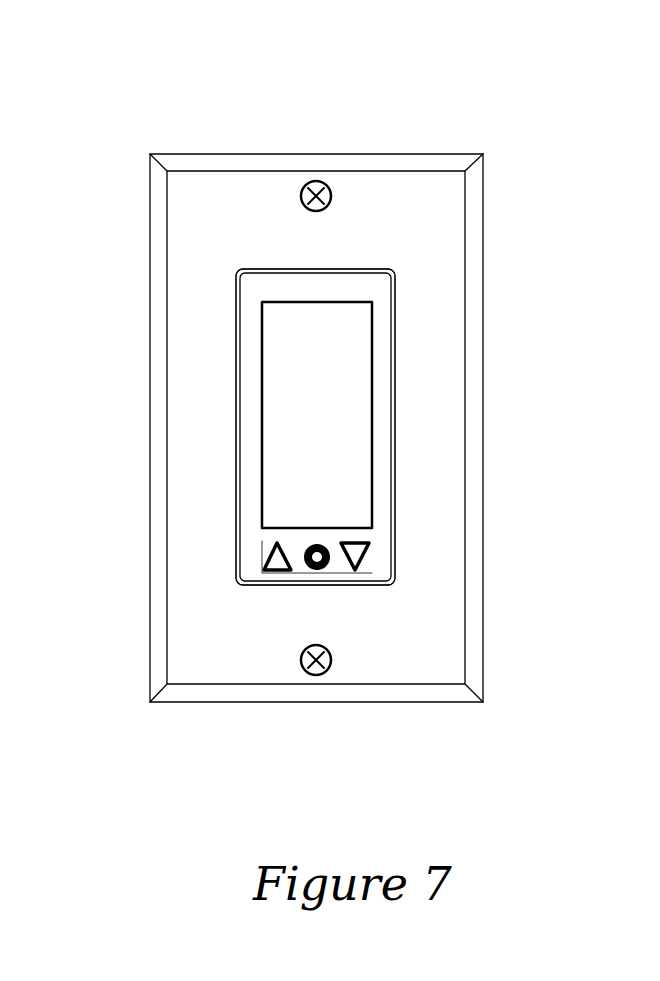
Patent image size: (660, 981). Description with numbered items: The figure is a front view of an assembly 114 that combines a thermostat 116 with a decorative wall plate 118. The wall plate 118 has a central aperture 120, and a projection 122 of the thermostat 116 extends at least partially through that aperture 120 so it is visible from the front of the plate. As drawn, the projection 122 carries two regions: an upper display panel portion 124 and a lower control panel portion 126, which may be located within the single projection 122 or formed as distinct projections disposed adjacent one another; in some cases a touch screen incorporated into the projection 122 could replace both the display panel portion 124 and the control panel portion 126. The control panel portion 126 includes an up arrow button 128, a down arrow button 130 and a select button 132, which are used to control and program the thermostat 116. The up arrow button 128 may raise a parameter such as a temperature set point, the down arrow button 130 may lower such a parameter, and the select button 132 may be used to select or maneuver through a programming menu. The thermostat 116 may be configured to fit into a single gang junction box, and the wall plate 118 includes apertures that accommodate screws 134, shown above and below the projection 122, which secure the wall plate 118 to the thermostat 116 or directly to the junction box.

The assembly 114 is at (530, 82).
The thermostat 116 is at (400, 254).
The wall plate 118 is at (443, 325).
The aperture 120 is at (237, 420).
The projection 122 is at (232, 465).
The display panel portion 124 is at (285, 352).
The control panel portion 126 is at (260, 590).
The up arrow button 128 is at (265, 557).
The down arrow button 130 is at (366, 560).
The select button 132 is at (318, 566).
The screws 134 is at (316, 181).